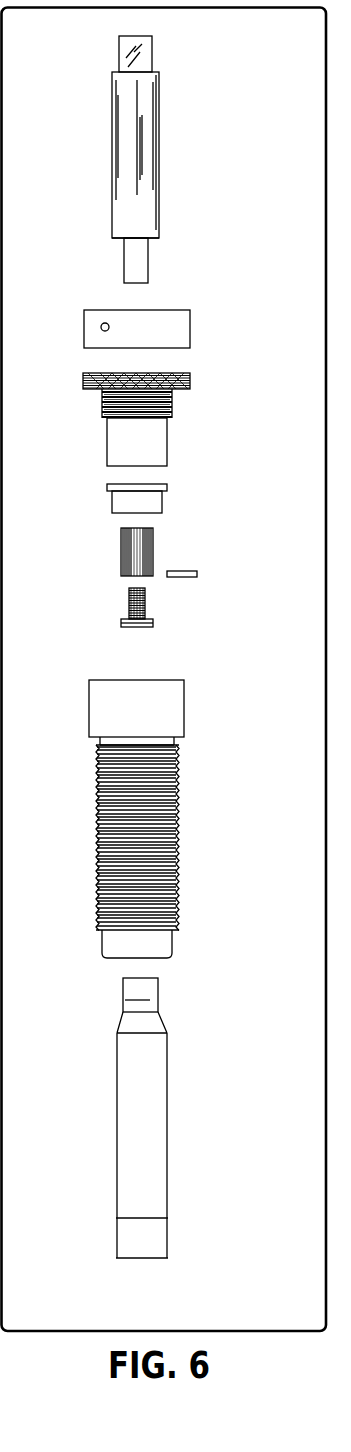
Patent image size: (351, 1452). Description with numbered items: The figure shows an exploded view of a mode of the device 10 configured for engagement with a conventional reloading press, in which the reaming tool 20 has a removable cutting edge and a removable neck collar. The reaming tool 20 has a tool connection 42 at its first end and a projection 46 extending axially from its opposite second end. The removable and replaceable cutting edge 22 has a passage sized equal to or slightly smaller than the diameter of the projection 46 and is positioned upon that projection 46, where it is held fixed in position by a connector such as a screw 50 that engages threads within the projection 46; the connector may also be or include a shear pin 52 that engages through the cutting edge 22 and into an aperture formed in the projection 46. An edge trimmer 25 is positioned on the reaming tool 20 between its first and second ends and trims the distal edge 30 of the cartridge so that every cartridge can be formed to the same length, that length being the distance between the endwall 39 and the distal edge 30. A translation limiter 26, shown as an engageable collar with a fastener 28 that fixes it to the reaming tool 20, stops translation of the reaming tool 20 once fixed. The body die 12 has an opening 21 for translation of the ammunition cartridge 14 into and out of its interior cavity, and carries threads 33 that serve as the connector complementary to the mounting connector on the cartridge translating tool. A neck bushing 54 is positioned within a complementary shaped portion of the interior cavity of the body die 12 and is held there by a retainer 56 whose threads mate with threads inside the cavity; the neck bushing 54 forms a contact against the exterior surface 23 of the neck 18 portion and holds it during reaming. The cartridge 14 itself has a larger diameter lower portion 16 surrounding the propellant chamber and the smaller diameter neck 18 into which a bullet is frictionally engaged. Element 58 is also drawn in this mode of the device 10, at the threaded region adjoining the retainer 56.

The device 10 is at (254, 166).
The body die 12 is at (183, 720).
The ammunition cartridge 14 is at (167, 1066).
The lower portion 16 is at (155, 1172).
The neck portion 18 is at (158, 999).
The reaming tool 20 is at (112, 83).
The opening 21 is at (148, 959).
The cutting edge 22 is at (121, 568).
The exterior surface 23 is at (140, 998).
The edge trimmer 25 is at (117, 239).
The translation limiter 26 is at (188, 336).
The fastener 28 is at (101, 327).
The distal edge 30 is at (137, 974).
The threads 33 is at (179, 837).
The endwall 39 is at (155, 1260).
The tool connection 42 is at (119, 51).
The projection 46 is at (142, 258).
The screw 50 is at (140, 623).
The shear pin 52 is at (185, 571).
The neck bushing 54 is at (158, 497).
The retainer 56 is at (190, 385).
The threaded portion 58 is at (102, 410).